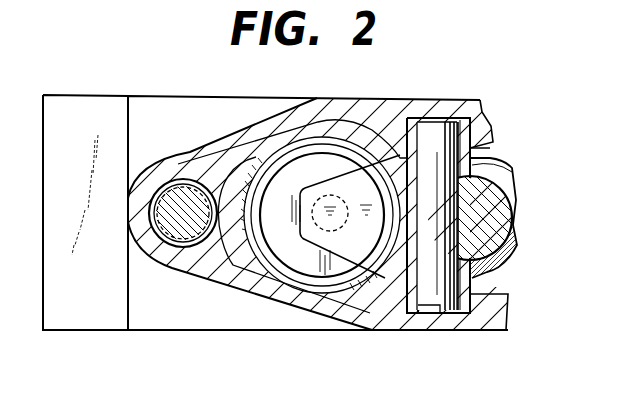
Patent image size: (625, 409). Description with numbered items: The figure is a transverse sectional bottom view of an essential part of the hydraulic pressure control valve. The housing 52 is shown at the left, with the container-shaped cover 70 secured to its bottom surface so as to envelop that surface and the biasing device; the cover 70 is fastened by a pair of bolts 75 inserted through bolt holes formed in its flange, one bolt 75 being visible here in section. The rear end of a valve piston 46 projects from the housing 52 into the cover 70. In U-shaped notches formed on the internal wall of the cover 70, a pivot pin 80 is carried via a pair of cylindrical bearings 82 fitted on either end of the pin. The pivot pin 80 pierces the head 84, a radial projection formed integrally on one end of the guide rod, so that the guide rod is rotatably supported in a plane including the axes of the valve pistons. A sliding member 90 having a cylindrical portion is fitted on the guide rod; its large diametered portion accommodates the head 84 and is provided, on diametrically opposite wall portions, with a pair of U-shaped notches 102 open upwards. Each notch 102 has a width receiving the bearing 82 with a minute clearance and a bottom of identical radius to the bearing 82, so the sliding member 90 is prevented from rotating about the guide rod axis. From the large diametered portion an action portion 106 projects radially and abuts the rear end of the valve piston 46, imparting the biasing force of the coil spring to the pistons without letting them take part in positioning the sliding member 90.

The housing 52 is at (154, 325).
The cover 70 is at (236, 323).
The bolts 75 is at (181, 197).
The valve piston 46 is at (317, 240).
The action portion 106 is at (355, 247).
The U-shaped notch 102 is at (432, 292).
The pivot pin 80 is at (442, 130).
The cylindrical bearing 82 is at (460, 130).
The head 84 is at (473, 217).
The sliding member 90 is at (518, 185).